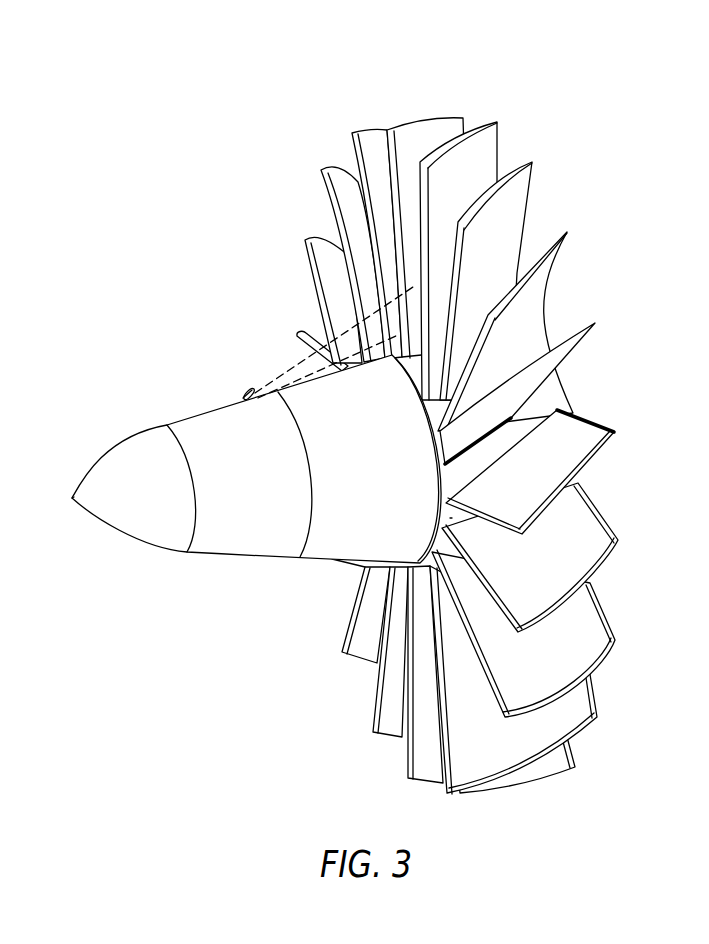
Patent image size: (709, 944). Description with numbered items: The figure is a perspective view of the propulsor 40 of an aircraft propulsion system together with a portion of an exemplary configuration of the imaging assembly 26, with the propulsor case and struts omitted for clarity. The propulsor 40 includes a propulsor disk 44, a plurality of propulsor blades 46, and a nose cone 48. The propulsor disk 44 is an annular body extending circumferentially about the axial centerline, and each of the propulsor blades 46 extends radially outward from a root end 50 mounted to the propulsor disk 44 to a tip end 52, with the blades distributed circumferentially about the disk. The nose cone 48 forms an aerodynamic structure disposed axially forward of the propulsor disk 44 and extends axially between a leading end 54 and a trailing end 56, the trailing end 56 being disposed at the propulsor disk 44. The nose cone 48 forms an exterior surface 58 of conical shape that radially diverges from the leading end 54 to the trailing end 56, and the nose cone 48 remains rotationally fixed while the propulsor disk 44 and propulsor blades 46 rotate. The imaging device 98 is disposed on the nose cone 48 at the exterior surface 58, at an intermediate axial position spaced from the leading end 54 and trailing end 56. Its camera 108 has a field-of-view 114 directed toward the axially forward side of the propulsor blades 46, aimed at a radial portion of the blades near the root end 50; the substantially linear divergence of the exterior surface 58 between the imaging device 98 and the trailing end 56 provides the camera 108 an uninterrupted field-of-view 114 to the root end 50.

The imaging assembly 26 is at (362, 421).
The propulsor 40 is at (490, 421).
The propulsor disk 44 is at (456, 421).
The propulsor blades 46 is at (580, 353).
The nose cone 48 is at (240, 457).
The root end 50 is at (397, 360).
The tip end 52 is at (441, 116).
The leading end 54 is at (72, 498).
The trailing end 56 is at (450, 518).
The exterior surface 58 is at (193, 410).
The imaging device 98 is at (251, 374).
The camera 108 is at (235, 387).
The field-of-view 114 is at (345, 333).